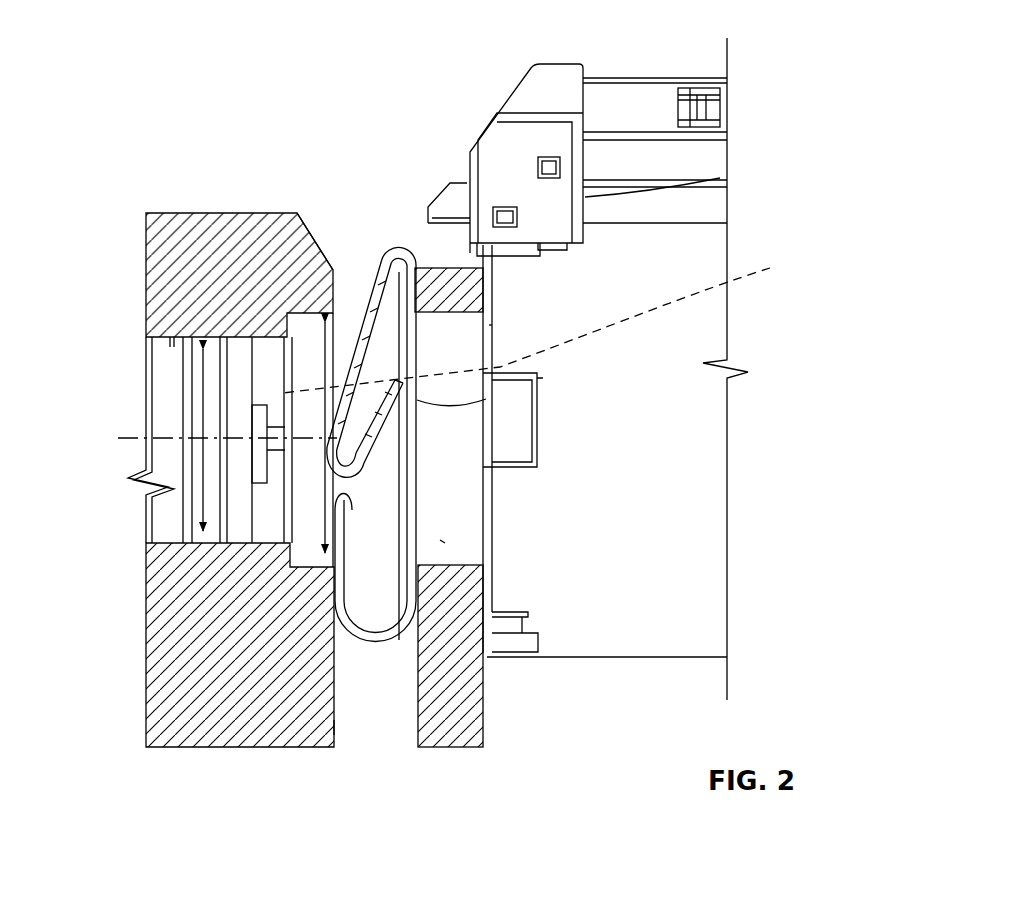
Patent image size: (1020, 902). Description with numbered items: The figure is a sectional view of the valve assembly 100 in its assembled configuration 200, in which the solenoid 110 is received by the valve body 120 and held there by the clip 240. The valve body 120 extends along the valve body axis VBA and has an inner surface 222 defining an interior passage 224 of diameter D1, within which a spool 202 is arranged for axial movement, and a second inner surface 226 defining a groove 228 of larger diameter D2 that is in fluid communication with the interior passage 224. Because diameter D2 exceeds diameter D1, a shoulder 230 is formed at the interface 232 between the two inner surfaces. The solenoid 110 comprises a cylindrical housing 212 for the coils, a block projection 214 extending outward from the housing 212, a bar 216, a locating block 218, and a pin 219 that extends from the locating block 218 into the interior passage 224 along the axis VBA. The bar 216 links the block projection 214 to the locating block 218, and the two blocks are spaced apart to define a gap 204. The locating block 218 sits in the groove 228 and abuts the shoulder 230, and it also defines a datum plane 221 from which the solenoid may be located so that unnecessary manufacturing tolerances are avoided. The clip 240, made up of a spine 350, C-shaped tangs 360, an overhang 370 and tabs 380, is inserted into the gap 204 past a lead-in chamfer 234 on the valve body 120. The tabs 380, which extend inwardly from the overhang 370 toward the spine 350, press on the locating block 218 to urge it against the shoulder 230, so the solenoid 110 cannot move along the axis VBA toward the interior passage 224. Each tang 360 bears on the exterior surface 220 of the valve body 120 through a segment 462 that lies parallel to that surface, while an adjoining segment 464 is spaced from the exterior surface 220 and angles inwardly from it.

The valve assembly 100 is at (495, 72).
The solenoid 110 is at (487, 318).
The valve body 120 is at (188, 237).
The assembled configuration 200 is at (373, 690).
The spool 202 is at (180, 420).
The gap 204 is at (422, 562).
The cylindrical housing 212 is at (655, 422).
The block projection 214 is at (440, 540).
The bar 216 is at (396, 642).
The locating block 218 is at (345, 490).
The pin 219 is at (337, 489).
The exterior surface 220 is at (334, 727).
The datum plane 221 is at (550, 324).
The inner surface 222 is at (233, 347).
The interior passage 224 is at (172, 347).
The inner surface 226 is at (323, 500).
The groove 228 is at (310, 323).
The shoulder 230 is at (330, 492).
The interface 232 is at (220, 365).
The chamfer 234 is at (310, 228).
The clip 240 is at (372, 260).
The spine 350 is at (385, 437).
The tangs 360 is at (358, 641).
The overhang 370 is at (393, 245).
The tabs 380 is at (348, 472).
The segment 462 is at (367, 548).
The segment 464 is at (357, 497).
The diameter D1 is at (193, 367).
The diameter D2 is at (489, 325).
The valve body axis VBA is at (135, 441).